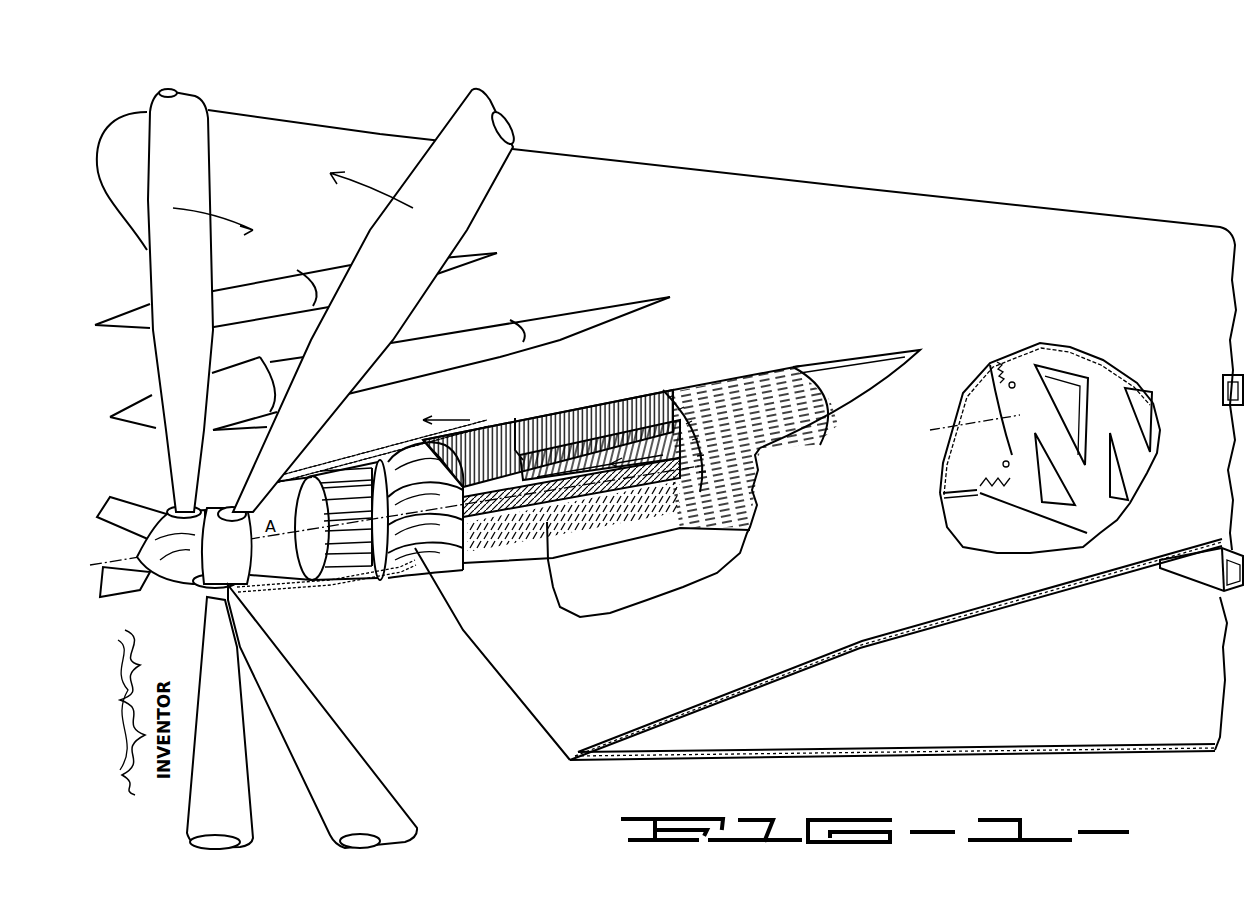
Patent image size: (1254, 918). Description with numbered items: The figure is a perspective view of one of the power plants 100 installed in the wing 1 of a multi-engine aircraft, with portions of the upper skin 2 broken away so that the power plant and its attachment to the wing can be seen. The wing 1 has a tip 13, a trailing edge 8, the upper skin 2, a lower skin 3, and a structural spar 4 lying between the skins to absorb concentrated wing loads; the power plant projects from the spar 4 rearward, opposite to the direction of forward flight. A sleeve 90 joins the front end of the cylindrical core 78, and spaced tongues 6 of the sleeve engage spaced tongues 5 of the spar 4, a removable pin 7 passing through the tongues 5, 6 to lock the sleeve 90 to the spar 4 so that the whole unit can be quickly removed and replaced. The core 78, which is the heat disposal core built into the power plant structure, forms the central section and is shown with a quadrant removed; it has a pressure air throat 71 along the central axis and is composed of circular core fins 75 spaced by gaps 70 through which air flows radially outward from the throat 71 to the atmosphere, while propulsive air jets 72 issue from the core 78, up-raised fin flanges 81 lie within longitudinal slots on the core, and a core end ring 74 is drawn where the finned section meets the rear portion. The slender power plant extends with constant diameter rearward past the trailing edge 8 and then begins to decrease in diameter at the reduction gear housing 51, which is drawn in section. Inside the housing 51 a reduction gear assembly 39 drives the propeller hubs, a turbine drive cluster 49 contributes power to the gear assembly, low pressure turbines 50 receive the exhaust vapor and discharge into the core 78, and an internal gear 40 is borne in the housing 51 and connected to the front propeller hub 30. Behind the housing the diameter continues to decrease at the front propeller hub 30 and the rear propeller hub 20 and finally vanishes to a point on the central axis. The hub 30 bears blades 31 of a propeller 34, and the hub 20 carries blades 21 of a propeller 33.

The wing panel 1 is at (857, 187).
The upper skin 2 is at (940, 633).
The lower skin 3 is at (962, 750).
The structural spar 4 is at (1197, 568).
The spaced tongues 5 is at (1000, 476).
The spaced tongues 6 is at (985, 467).
The removable pin 7 is at (1010, 456).
The trailing edge 8 is at (518, 722).
The tip 13 is at (115, 125).
The rear propeller hub 20 is at (168, 575).
The blades 21 is at (308, 688).
The front propeller hub 30 is at (213, 503).
The blades 31 is at (320, 426).
The propeller 33 is at (195, 348).
The propeller 34 is at (393, 303).
The reduction gear assembly 39 is at (291, 582).
The internal gear 40 is at (331, 582).
The turbine drive cluster 49 is at (392, 462).
The low pressure turbines 50 is at (399, 582).
The reduction gear housing 51 is at (322, 592).
The gaps 70 is at (607, 400).
The pressure air throat 71 is at (560, 447).
The propulsive air jets 72 is at (500, 420).
The cowling end ring 74 is at (663, 395).
The circular core fins 75 is at (523, 418).
The cylindrical core 78 is at (581, 392).
The up-raised fin flanges 81 is at (812, 420).
The sleeve 90 is at (836, 365).
The power plants 100 is at (314, 270).